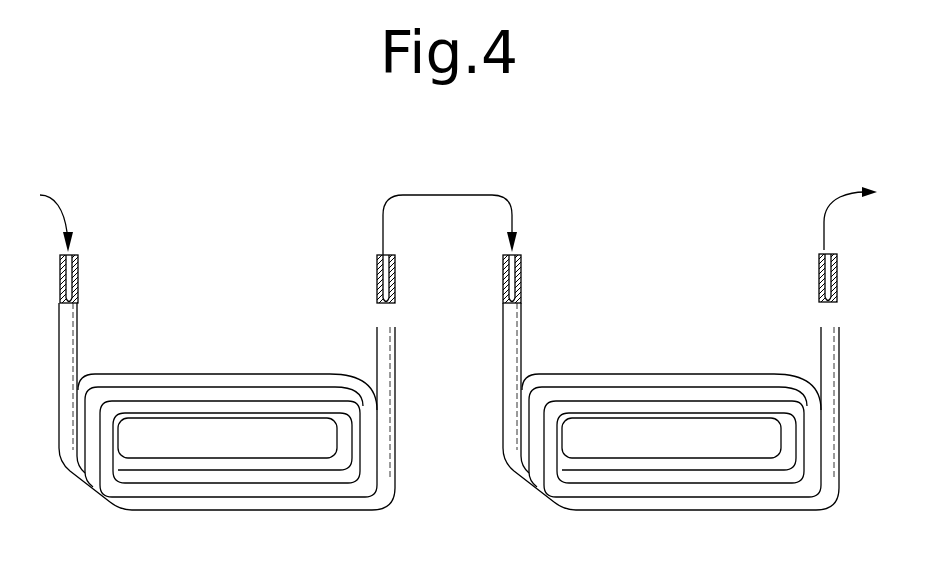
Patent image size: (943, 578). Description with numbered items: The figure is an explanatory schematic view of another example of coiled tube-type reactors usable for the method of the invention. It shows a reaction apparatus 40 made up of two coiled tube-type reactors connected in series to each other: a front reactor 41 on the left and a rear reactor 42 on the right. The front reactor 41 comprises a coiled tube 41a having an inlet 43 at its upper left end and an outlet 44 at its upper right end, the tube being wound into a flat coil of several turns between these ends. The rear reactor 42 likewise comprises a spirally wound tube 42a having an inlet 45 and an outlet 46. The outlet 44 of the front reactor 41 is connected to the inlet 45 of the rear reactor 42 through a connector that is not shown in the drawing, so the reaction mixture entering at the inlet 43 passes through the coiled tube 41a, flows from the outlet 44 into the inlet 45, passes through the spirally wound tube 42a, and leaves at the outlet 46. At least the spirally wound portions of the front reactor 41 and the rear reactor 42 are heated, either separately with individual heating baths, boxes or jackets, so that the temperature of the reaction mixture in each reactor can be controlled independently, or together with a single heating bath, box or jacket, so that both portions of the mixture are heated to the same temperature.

The reaction apparatus 40 is at (286, 220).
The front reactor 41 is at (243, 352).
The coiled tube 41a is at (70, 323).
The rear reactor 42 is at (686, 355).
The spirally wound tube 42a is at (515, 355).
The inlet 43 is at (77, 264).
The outlet 44 is at (378, 281).
The inlet 45 is at (515, 283).
The outlet 46 is at (832, 280).